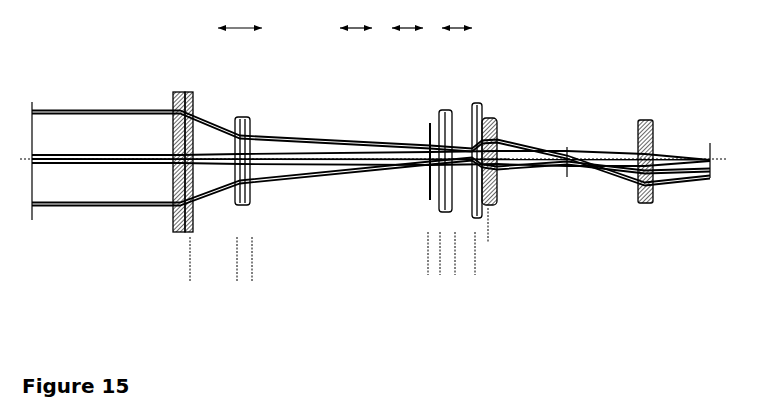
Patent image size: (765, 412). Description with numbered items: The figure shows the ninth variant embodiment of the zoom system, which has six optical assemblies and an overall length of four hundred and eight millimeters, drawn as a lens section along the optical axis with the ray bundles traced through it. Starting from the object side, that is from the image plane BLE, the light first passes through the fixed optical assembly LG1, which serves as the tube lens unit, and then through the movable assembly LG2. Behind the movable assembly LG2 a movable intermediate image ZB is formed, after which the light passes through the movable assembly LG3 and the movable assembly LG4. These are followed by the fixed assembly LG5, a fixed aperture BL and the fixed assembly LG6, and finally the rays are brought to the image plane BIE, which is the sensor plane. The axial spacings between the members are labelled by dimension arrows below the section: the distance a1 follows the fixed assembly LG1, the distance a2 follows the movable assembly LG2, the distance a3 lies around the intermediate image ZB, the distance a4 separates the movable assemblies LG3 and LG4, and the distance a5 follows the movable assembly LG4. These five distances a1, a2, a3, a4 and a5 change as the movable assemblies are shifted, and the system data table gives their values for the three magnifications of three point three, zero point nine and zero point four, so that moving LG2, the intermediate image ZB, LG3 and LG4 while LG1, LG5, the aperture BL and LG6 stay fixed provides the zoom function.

The image plane BLE is at (28, 104).
The fixed optical assembly LG1 is at (182, 92).
The movable assembly LG2 is at (244, 116).
The movable intermediate image ZB is at (428, 121).
The movable assembly LG3 is at (445, 108).
The movable assembly LG4 is at (477, 103).
The fixed assembly LG5 is at (491, 118).
The fixed aperture BL is at (566, 130).
The fixed assembly LG6 is at (643, 110).
The image plane (sensor plane) BIE is at (710, 143).
The air distance a1 is at (237, 271).
The air distance a2 is at (428, 271).
The air distance a3 is at (455, 253).
The air distance a4 is at (475, 271).
The air distance a5 is at (484, 253).